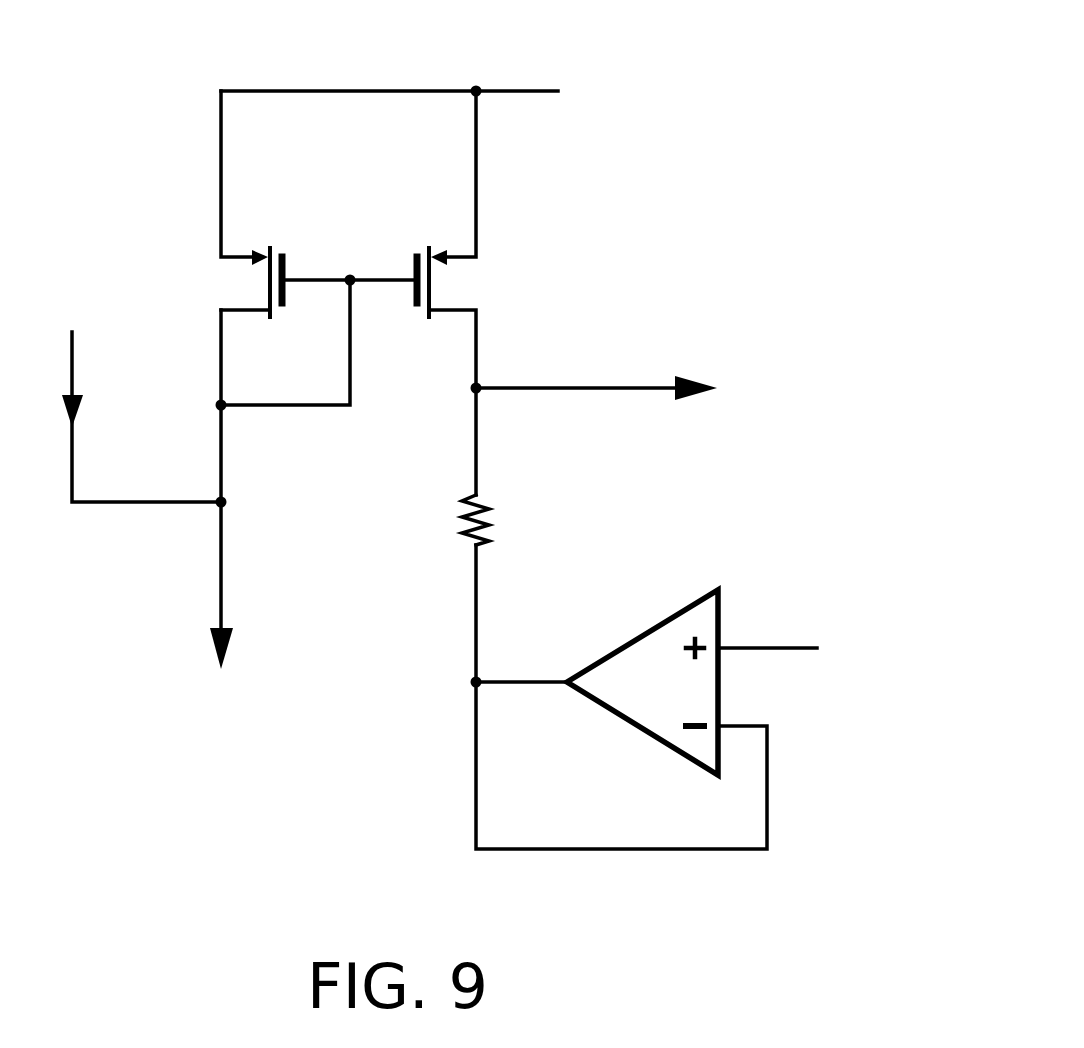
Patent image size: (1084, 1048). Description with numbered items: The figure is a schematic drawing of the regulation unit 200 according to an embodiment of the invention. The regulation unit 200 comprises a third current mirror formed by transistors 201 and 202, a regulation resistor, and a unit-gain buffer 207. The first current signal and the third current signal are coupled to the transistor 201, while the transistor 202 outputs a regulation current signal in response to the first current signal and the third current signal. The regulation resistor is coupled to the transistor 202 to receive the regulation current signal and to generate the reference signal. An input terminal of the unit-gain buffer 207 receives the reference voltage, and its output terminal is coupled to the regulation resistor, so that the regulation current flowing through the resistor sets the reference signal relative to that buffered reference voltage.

The regulation unit 200 is at (473, 424).
The transistor 201 is at (225, 278).
The transistor 202 is at (475, 280).
The unit-gain buffer 207 is at (645, 627).